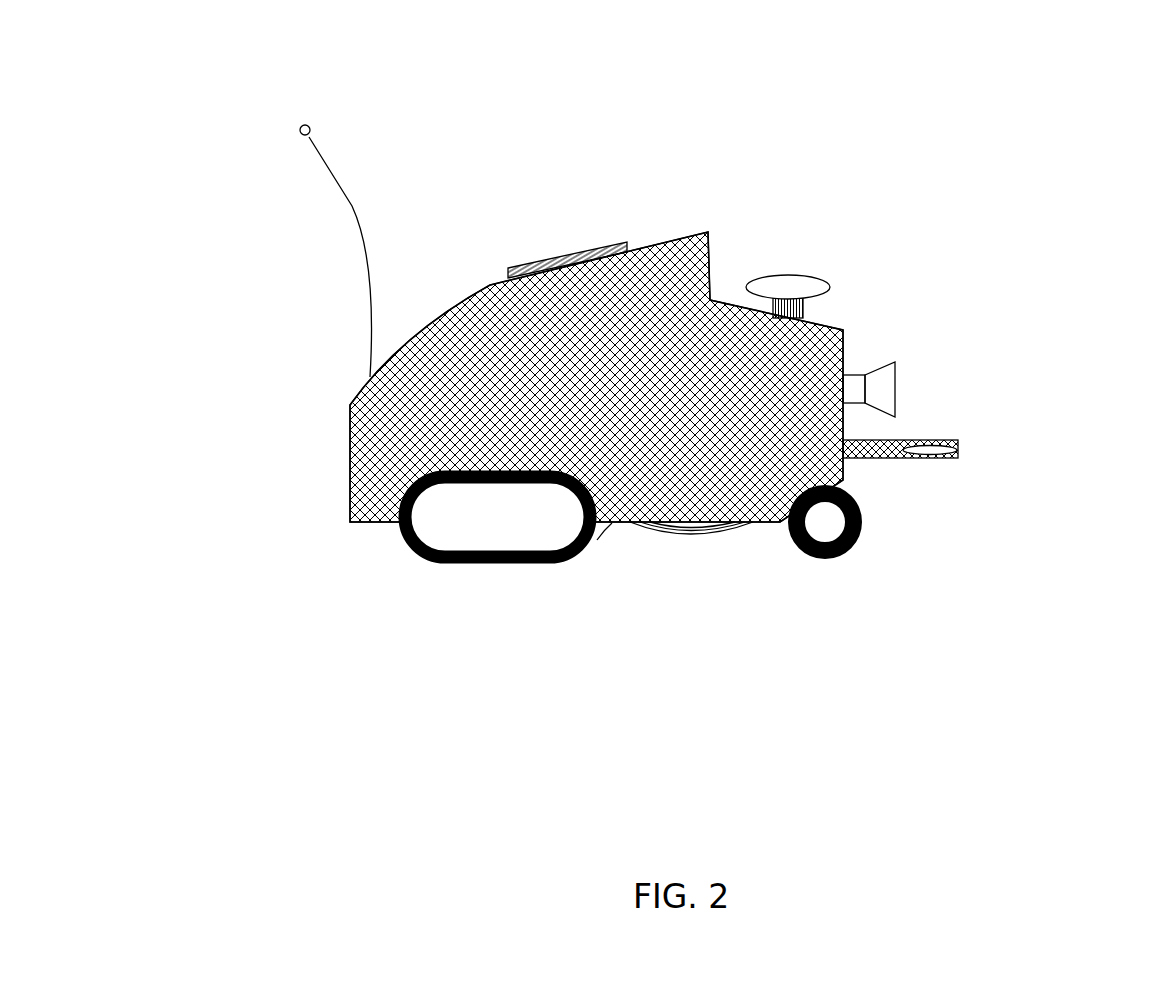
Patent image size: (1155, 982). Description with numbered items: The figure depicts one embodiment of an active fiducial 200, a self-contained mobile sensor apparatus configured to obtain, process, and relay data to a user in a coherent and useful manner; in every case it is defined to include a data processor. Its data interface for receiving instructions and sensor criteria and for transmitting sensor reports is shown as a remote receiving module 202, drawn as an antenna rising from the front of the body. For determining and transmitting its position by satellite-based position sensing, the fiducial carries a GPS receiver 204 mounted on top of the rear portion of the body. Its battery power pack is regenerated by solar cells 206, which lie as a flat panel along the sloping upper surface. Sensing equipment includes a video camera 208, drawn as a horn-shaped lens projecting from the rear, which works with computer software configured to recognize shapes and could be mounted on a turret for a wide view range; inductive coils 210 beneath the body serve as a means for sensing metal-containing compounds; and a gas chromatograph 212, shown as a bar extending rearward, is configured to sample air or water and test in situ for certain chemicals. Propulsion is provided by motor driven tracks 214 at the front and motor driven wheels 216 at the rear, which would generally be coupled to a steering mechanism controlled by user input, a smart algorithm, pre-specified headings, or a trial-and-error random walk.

The active fiducial 200 is at (842, 202).
The remote receiving module 202 is at (352, 206).
The GPS receiver 204 is at (832, 290).
The solar cells 206 is at (573, 253).
The video camera 208 is at (897, 393).
The inductive coils 210 is at (717, 533).
The gas chromatograph 212 is at (958, 452).
The motor driven tracks 214 is at (495, 562).
The motor driven wheels 216 is at (863, 527).